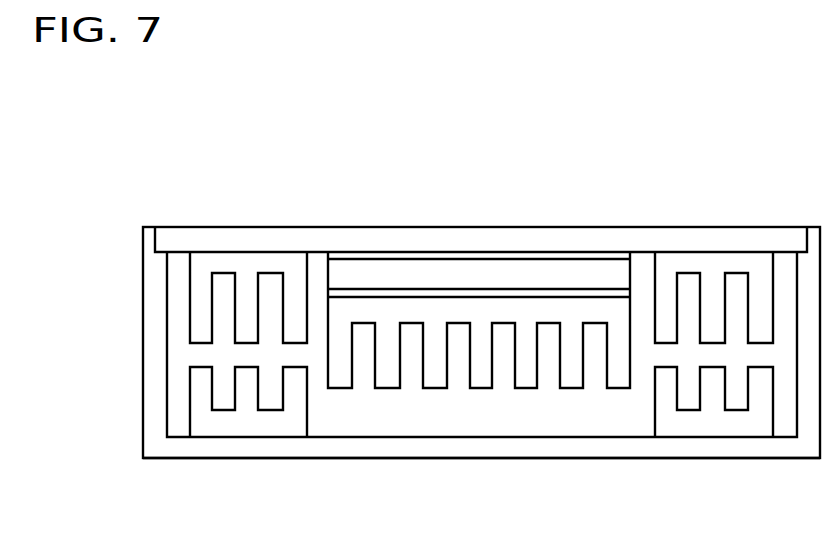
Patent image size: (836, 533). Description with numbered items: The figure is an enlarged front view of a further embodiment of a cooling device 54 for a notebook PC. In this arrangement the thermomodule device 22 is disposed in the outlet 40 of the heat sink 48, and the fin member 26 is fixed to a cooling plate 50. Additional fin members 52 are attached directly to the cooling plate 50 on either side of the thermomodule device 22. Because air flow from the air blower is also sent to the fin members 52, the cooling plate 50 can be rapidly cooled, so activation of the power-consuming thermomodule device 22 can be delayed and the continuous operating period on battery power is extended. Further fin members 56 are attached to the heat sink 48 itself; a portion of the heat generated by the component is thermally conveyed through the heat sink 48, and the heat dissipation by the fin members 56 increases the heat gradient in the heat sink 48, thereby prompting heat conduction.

The cooling device 54 is at (690, 156).
The fin members 52 is at (263, 272).
The fin members 56 is at (250, 410).
The cooling plate 50 is at (407, 235).
The thermomodule device 22 is at (480, 270).
The fin member 26 is at (572, 315).
The outlet 40 is at (422, 420).
The heat sink 48 is at (530, 442).